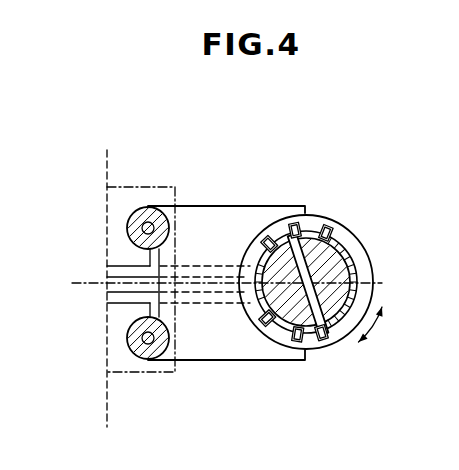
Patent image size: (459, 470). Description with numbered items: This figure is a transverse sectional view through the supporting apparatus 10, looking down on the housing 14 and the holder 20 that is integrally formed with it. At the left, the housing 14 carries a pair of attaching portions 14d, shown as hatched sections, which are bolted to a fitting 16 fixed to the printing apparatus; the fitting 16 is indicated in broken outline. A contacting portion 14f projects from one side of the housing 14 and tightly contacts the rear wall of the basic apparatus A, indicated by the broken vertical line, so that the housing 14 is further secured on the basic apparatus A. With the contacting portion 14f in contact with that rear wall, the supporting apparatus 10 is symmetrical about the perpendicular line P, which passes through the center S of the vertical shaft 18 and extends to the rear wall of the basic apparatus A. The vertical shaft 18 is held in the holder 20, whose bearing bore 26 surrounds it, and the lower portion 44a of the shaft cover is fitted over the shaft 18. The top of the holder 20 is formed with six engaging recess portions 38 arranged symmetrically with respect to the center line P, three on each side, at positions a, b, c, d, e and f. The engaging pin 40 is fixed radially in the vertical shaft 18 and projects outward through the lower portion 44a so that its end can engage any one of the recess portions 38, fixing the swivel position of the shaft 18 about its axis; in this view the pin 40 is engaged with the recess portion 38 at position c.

The supporting apparatus 10 is at (252, 182).
The housing 14 is at (193, 352).
The attaching portions 14d is at (145, 214).
The contacting portion 14f is at (117, 266).
The fitting 16 is at (175, 187).
The vertical shaft 18 is at (350, 262).
The holder 20 is at (365, 274).
The bearing bore 26 is at (257, 254).
The engaging recess portions 38 is at (263, 336).
The engaging pin 40 is at (306, 347).
The lower portion 44a is at (333, 248).
The basic apparatus A is at (108, 161).
The perpendicular line P is at (72, 283).
The center S is at (374, 291).
The position a is at (262, 331).
The position b is at (302, 345).
The position c is at (324, 344).
The position d is at (262, 236).
The position e is at (294, 222).
The position f is at (328, 222).